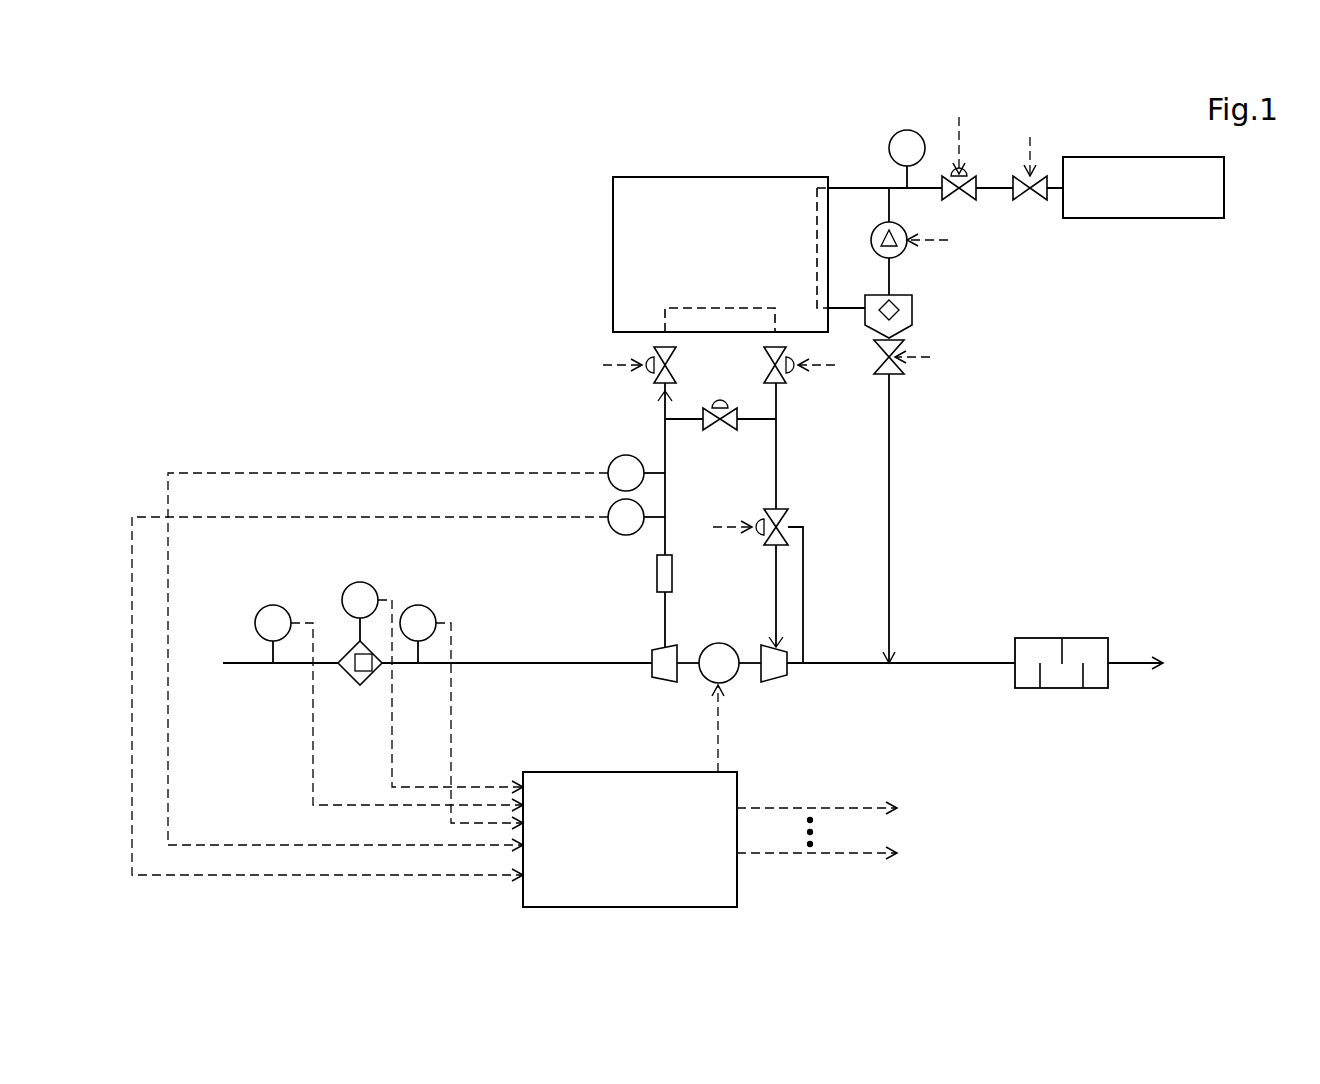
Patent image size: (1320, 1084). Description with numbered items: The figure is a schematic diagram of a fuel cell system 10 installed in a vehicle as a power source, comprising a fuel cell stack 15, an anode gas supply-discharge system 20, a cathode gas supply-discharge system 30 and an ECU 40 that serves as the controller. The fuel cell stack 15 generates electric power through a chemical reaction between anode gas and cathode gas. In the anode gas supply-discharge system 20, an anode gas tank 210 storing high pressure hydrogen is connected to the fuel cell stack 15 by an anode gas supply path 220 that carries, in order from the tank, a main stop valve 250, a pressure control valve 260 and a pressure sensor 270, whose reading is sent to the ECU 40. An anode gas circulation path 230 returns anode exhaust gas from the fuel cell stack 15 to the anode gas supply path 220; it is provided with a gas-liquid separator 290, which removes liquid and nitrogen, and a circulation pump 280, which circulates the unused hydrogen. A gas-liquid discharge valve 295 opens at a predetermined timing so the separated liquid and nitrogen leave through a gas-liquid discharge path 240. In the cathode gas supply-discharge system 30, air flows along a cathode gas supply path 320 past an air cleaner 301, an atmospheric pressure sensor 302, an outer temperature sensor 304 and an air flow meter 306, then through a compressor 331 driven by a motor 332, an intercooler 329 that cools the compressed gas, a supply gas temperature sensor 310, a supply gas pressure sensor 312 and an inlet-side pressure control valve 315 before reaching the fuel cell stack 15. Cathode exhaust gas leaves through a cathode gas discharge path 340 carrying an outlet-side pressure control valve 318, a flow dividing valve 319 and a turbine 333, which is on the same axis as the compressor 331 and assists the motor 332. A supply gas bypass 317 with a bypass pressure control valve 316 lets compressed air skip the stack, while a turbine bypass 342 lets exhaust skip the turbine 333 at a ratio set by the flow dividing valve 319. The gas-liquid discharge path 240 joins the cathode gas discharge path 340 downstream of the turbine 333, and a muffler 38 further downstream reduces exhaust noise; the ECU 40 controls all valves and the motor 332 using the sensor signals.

The fuel cell system 10 is at (198, 176).
The fuel cell stack 15 is at (718, 177).
The anode gas supply-discharge system 20 is at (1014, 287).
The cathode gas supply-discharge system 30 is at (320, 572).
The muffler 38 is at (1077, 638).
The ECU 40 is at (698, 772).
The anode gas tank 210 is at (1143, 157).
The anode gas supply path 220 is at (852, 188).
The anode gas circulation path 230 is at (845, 308).
The gas-liquid discharge path 240 is at (890, 548).
The main stop valve 250 is at (1035, 200).
The pressure control valve 260 is at (968, 200).
The pressure sensor 270 is at (906, 130).
The circulation pump 280 is at (896, 230).
The gas-liquid separator 290 is at (912, 310).
The gas-liquid discharge valve 295 is at (899, 370).
The air cleaner 301 is at (358, 688).
The atmospheric pressure sensor 302 is at (273, 605).
The outer temperature sensor 304 is at (358, 582).
The air flow meter 306 is at (417, 605).
The supply gas temperature sensor 310 is at (613, 525).
The supply gas pressure sensor 312 is at (613, 458).
The inlet-side pressure control valve 315 is at (657, 393).
The bypass pressure control valve 316 is at (724, 433).
The supply gas bypass 317 is at (776, 419).
The outlet-side pressure control valve 318 is at (763, 368).
The flow dividing valve 319 is at (764, 510).
The cathode gas supply path 320 is at (663, 540).
The intercooler 329 is at (673, 560).
The compressor 331 is at (665, 685).
The motor 332 is at (703, 648).
The turbine 333 is at (775, 685).
The cathode gas discharge path 340 is at (777, 473).
The turbine bypass 342 is at (804, 585).